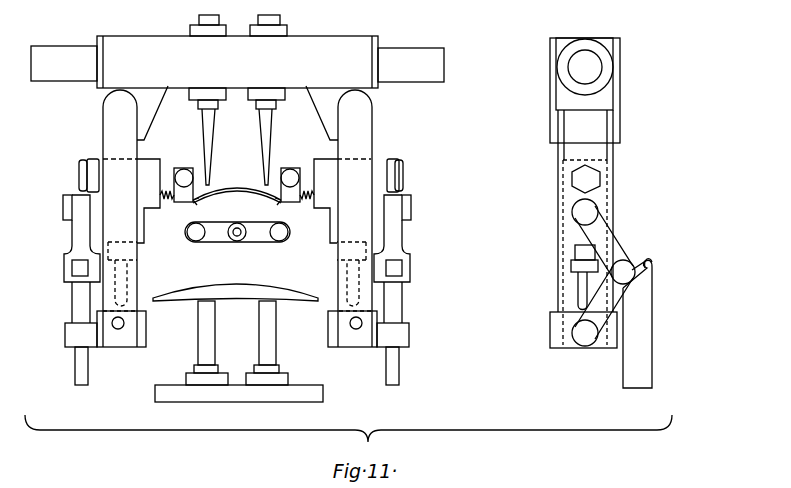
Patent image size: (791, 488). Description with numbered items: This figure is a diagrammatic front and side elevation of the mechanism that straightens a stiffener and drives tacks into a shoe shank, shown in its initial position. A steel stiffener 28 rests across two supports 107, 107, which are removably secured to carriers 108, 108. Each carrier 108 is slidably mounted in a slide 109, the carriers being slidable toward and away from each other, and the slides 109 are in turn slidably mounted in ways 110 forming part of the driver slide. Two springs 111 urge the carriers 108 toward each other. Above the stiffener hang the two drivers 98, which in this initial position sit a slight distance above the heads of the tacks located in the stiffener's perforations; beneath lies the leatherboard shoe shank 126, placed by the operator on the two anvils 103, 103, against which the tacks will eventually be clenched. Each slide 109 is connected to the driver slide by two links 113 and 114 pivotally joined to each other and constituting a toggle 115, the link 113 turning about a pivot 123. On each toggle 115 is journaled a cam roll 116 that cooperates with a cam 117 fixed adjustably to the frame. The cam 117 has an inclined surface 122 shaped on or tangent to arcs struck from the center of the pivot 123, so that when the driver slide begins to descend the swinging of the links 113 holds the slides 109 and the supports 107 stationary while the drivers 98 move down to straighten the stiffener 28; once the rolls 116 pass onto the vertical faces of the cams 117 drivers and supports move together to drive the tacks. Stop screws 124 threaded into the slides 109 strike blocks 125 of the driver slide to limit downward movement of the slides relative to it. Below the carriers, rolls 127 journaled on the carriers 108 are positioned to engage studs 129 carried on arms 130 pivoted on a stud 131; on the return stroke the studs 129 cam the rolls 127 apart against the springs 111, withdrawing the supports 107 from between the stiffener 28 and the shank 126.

The steel stiffener 28 is at (234, 189).
The driver 98 is at (207, 120).
The anvil 103 is at (266, 334).
The support 107 is at (196, 203).
The carrier 108 is at (165, 175).
The slide 109 is at (99, 177).
The ways 110 is at (113, 143).
The spring 111 is at (160, 190).
The link 113 is at (82, 237).
The link 114 is at (83, 316).
The toggle 115 is at (235, 265).
The cam roll 116 is at (80, 275).
The cam 117 is at (80, 373).
The inclined surface 122 is at (654, 262).
The pivot 123 is at (65, 210).
The stop screw 124 is at (127, 285).
The block 125 is at (146, 335).
The leatherboard shoe shank 126 is at (239, 290).
The roll 127 is at (192, 173).
The stud 129 is at (194, 242).
The arm 130 is at (260, 241).
The stud 131 is at (237, 223).